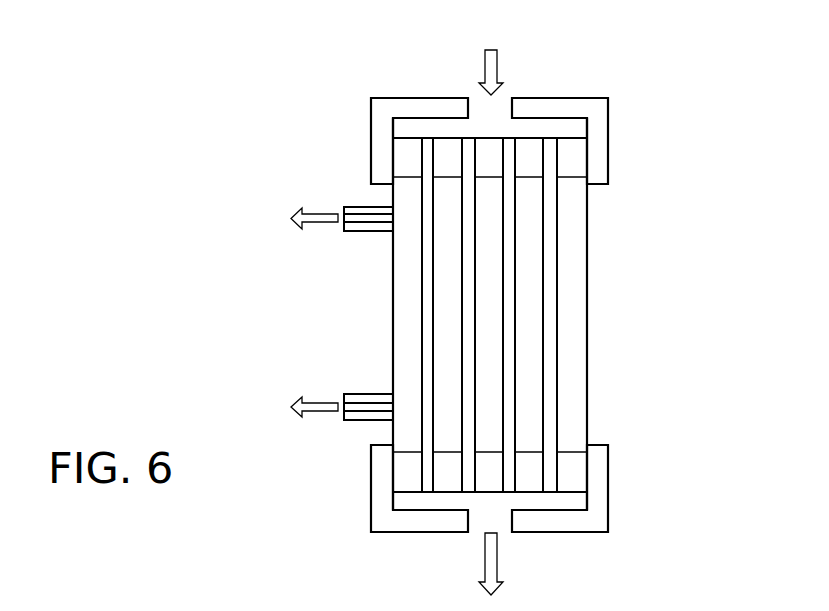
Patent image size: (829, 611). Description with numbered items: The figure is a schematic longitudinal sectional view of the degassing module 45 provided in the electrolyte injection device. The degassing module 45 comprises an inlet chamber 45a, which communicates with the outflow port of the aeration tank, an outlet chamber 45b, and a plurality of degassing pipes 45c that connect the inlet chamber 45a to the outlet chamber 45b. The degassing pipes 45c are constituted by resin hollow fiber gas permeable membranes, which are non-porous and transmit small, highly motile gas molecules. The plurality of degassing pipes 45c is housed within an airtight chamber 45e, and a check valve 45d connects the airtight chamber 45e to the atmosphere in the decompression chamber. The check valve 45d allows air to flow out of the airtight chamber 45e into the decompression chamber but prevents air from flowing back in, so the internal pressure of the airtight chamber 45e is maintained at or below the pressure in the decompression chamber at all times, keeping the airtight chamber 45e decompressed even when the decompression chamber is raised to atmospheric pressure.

The degassing module 45 is at (399, 83).
The inlet chamber 45a is at (538, 133).
The outlet chamber 45b is at (565, 499).
The degassing pipes 45c is at (510, 278).
The check valve 45d is at (362, 208).
The airtight chamber 45e is at (588, 330).